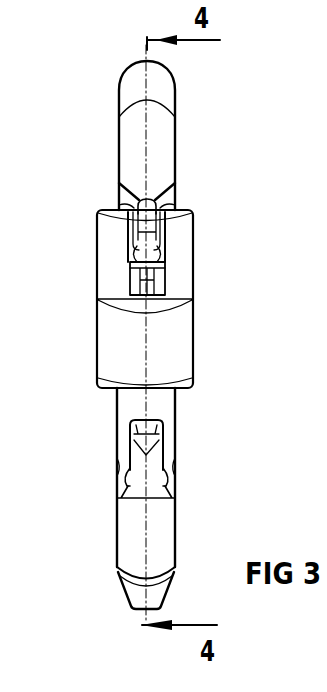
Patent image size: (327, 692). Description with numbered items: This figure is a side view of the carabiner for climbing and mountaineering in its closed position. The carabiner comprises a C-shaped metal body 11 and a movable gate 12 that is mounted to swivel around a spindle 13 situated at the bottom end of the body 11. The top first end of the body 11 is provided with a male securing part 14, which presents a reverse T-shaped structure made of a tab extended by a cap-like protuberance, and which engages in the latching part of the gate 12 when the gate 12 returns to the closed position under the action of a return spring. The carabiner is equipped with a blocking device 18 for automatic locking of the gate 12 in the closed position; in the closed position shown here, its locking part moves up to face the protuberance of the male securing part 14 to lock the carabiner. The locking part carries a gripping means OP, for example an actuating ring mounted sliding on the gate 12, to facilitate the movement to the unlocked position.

The C-shaped metal body 11 is at (162, 82).
The movable gate 12 is at (156, 407).
The spindle 13 is at (0, 5).
The male securing part 14 is at (147, 225).
The blocking device 18 is at (167, 260).
The gripping means OP is at (128, 342).